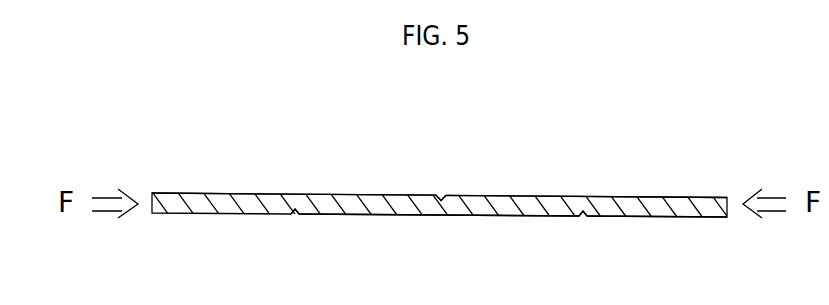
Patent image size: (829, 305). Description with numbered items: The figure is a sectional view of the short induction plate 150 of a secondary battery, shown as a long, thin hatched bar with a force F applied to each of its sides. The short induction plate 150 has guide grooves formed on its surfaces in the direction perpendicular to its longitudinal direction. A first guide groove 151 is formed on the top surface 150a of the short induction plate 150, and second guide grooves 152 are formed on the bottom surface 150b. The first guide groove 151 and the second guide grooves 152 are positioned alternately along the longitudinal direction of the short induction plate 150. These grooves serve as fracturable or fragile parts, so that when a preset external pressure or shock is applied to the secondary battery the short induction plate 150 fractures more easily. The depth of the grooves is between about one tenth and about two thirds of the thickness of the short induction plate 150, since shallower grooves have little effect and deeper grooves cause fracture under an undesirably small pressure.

The short induction plate 150 is at (714, 168).
The top surface 150a is at (532, 196).
The bottom surface 150b is at (408, 216).
The first guide groove 151 is at (440, 195).
The second guide groove 152 is at (295, 215).